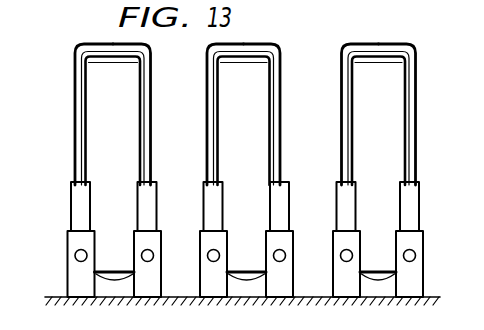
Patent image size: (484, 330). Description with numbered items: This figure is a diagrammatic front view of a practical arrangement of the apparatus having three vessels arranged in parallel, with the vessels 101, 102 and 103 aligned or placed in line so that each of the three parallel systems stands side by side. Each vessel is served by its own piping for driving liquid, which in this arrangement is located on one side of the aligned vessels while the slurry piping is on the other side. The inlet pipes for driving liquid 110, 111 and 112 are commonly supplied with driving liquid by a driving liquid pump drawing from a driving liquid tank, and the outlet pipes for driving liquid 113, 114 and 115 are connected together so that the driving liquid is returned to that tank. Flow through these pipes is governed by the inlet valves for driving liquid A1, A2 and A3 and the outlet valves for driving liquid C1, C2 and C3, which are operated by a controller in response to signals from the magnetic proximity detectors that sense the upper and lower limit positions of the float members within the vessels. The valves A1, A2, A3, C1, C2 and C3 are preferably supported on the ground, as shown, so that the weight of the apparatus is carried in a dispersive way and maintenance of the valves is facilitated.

The vessel 101 is at (392, 119).
The vessel 102 is at (259, 119).
The vessel 103 is at (131, 119).
The inlet pipe for driving liquid 110 is at (416, 76).
The inlet pipe for driving liquid 111 is at (280, 76).
The inlet pipe for driving liquid 112 is at (151, 77).
The outlet pipe for driving liquid 113 is at (341, 151).
The outlet pipe for driving liquid 114 is at (207, 151).
The outlet pipe for driving liquid 115 is at (75, 153).
The inlet valve for driving liquid A1 is at (424, 260).
The inlet valve for driving liquid A2 is at (293, 265).
The inlet valve for driving liquid A3 is at (161, 265).
The outlet valve for driving liquid C1 is at (333, 245).
The outlet valve for driving liquid C2 is at (200, 243).
The outlet valve for driving liquid C3 is at (68, 248).